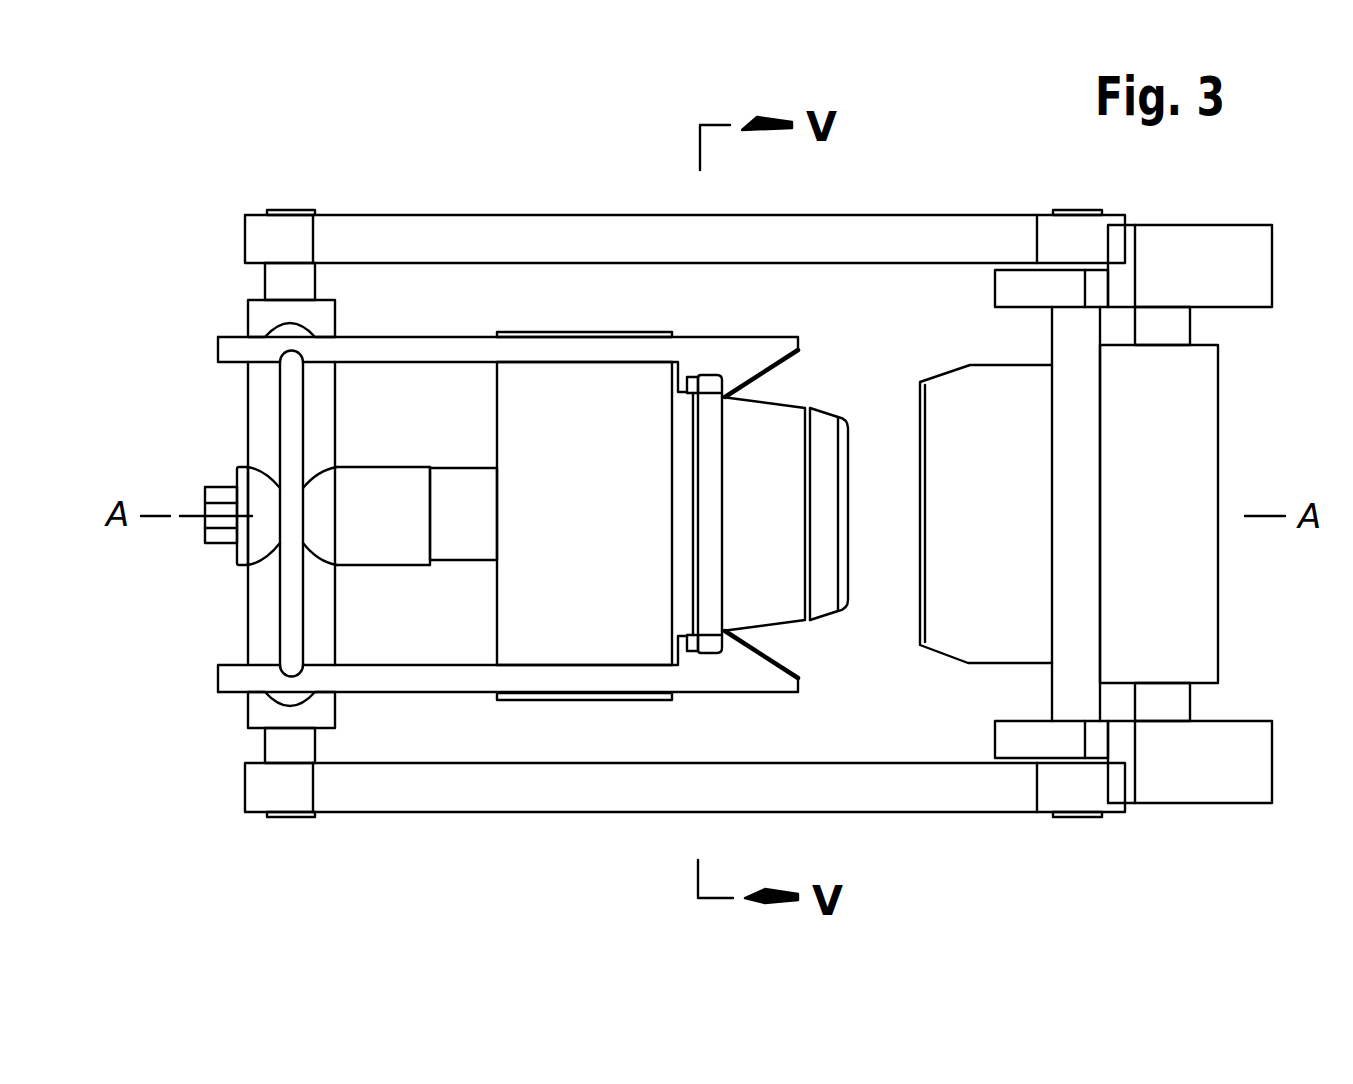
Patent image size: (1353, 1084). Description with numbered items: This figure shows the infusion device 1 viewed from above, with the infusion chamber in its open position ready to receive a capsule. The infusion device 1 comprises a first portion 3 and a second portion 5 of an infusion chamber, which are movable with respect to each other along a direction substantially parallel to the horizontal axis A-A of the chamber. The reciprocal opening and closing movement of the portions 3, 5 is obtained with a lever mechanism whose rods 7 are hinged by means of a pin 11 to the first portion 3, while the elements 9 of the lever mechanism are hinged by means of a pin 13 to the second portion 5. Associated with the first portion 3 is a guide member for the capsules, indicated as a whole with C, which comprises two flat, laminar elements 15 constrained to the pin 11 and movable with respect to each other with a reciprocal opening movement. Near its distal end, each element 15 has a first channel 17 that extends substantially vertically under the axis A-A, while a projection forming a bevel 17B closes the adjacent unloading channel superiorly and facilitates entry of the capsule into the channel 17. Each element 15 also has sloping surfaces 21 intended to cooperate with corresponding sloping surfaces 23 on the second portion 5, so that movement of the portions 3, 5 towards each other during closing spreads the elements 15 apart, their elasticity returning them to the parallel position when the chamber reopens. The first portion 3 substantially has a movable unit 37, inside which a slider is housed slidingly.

The infusion device 1 is at (590, 172).
The first portion of the infusion chamber 3 is at (593, 710).
The second portion of the infusion chamber 5 is at (988, 678).
The rods of the lever mechanism 7 is at (448, 228).
The elements of the lever mechanism 9 is at (1202, 235).
The pin 11 is at (275, 273).
The pin 13 is at (1173, 327).
The elements of the guide member 15 is at (392, 343).
The first channel 17 is at (692, 377).
The bevel 17B is at (710, 376).
The sloping surfaces 21 is at (783, 367).
The sloping surfaces 23 is at (943, 378).
The movable unit 37 is at (510, 435).
The guide member for the capsules C is at (808, 396).